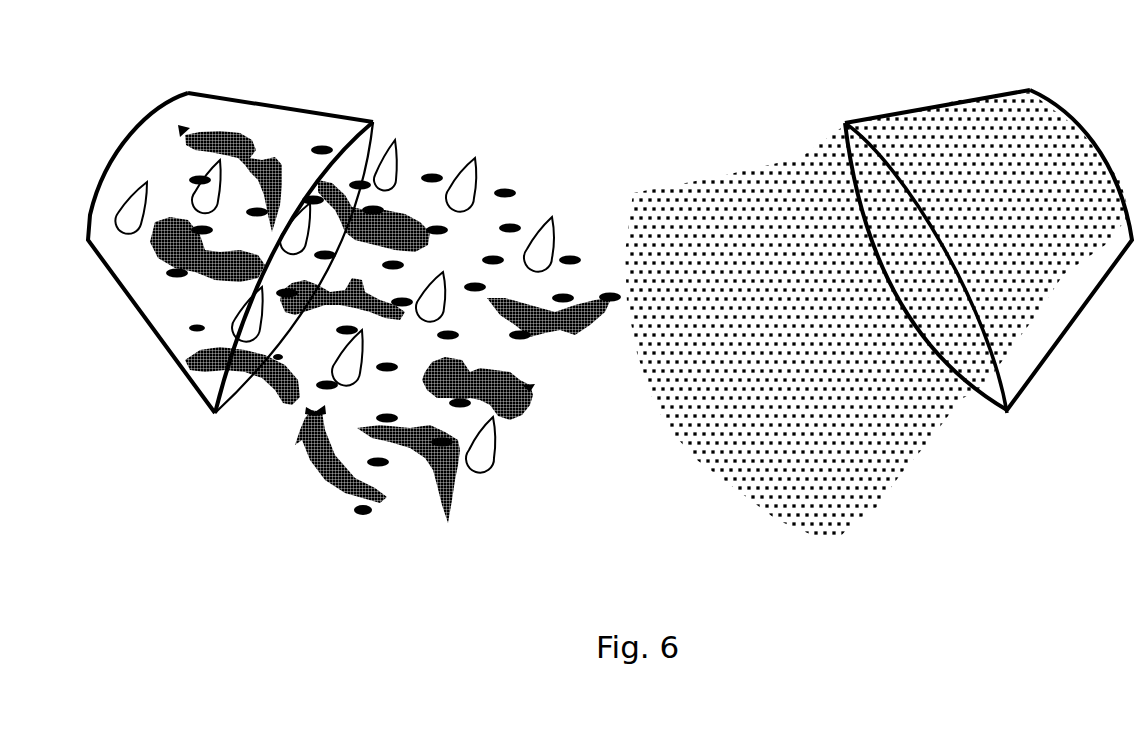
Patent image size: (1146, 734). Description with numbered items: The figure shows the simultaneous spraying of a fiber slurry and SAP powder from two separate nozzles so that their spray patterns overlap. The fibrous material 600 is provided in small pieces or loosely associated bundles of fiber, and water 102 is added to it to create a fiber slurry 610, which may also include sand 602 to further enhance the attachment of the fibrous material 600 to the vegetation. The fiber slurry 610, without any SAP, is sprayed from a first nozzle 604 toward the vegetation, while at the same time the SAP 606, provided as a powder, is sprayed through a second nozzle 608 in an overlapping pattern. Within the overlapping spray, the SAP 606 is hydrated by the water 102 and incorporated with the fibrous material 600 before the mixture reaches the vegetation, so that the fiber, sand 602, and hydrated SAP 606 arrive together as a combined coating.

The first nozzle 604 is at (232, 95).
The second nozzle 608 is at (927, 107).
The SAP 606 is at (717, 161).
The sand 602 is at (434, 174).
The water 102 is at (478, 166).
The fibrous material 600 is at (298, 445).
The fiber slurry 610 is at (357, 562).